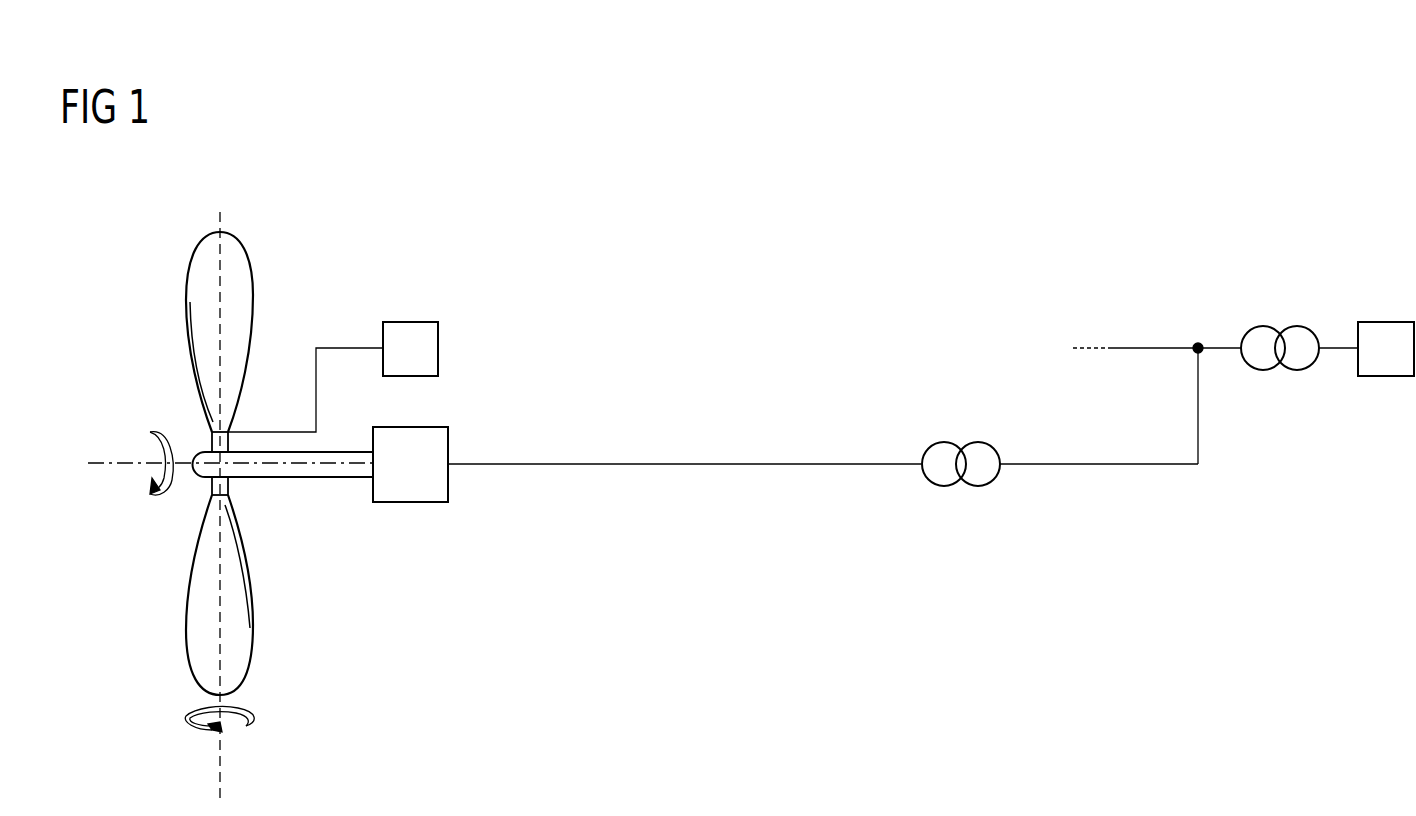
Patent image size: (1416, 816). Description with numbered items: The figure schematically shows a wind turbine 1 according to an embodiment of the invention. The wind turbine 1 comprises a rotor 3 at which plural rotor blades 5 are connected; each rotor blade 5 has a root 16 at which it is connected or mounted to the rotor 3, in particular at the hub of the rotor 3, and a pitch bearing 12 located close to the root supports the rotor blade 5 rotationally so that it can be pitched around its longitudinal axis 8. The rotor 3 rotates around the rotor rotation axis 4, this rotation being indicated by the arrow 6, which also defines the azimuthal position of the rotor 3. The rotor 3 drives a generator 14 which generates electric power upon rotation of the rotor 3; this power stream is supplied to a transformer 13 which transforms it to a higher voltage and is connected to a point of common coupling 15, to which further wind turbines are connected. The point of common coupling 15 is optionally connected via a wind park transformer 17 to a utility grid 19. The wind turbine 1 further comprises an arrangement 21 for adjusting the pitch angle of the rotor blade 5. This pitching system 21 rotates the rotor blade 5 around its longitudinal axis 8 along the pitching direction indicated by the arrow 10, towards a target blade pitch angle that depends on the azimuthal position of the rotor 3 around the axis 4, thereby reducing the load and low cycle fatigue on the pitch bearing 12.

The wind turbine 1 is at (1010, 215).
The rotor 3 is at (350, 468).
The rotor rotation axis 4 is at (96, 466).
The rotor blade 5 is at (240, 278).
The arrow indicating rotor rotation 6 is at (155, 498).
The longitudinal axis of the rotor blade 8 is at (222, 213).
The arrow indicating pitching direction 10 is at (252, 716).
The pitch bearing 12 is at (229, 442).
The transformer 13 is at (943, 441).
The generator 14 is at (216, 231).
The point of common coupling 15 is at (1196, 342).
The root 16 is at (211, 449).
The wind park transformer 17 is at (1263, 325).
The utility grid 19 is at (1385, 320).
The arrangement for adjusting a pitch angle 21 is at (410, 320).